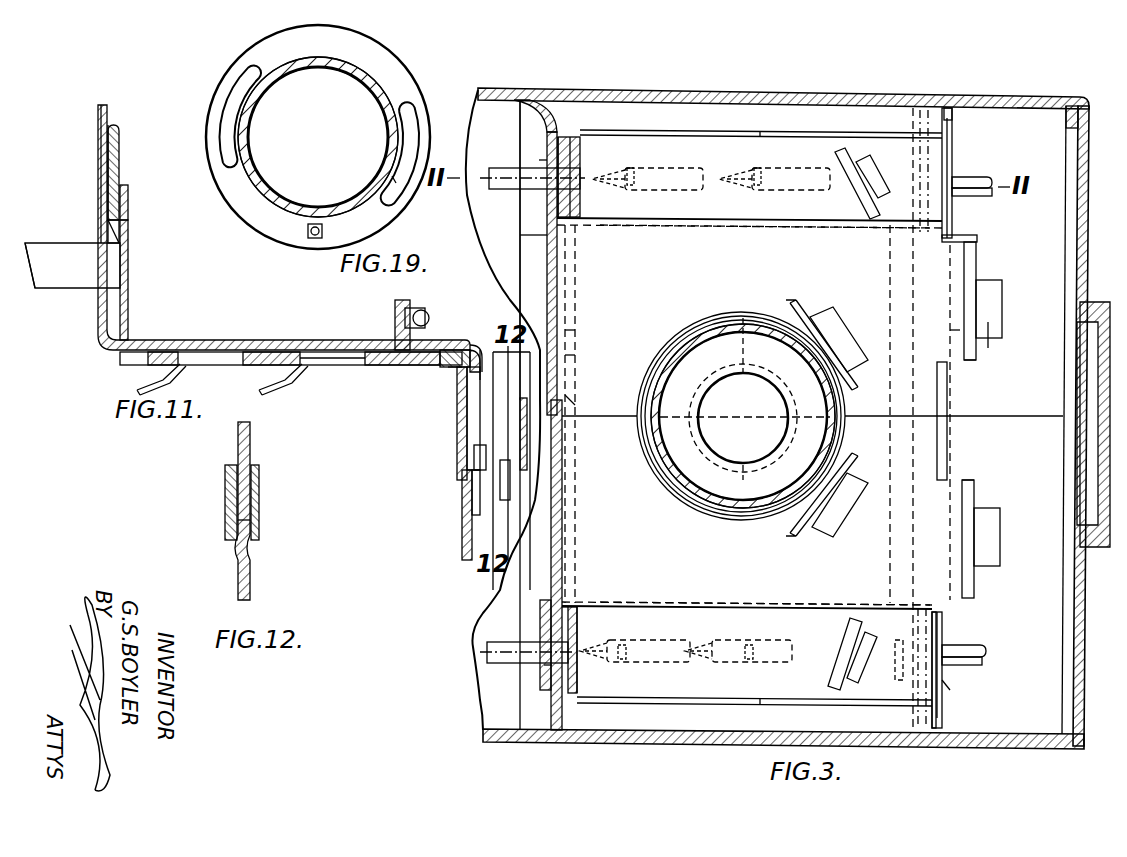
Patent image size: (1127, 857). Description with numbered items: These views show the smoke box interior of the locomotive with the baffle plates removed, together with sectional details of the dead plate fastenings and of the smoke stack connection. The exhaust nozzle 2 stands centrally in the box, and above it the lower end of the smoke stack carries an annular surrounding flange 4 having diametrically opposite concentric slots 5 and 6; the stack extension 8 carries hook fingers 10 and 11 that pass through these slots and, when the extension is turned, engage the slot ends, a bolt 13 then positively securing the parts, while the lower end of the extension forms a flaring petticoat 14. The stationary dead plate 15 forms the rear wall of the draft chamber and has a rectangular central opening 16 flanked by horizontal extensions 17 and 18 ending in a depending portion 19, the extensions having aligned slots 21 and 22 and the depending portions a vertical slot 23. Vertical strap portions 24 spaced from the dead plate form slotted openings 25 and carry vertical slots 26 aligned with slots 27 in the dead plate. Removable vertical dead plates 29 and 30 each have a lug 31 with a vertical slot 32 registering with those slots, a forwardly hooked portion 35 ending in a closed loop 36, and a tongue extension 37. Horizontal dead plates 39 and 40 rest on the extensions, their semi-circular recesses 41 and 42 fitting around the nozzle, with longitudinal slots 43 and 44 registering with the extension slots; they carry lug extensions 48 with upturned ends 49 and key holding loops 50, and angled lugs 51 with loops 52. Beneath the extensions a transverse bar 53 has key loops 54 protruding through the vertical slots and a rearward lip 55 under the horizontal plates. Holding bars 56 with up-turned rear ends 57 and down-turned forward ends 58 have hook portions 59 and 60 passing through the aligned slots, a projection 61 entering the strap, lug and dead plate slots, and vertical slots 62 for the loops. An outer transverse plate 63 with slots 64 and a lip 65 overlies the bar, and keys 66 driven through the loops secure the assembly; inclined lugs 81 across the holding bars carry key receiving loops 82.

In FIG. 3, the exhaust nozzle 2 is at (698, 434).
In FIG. 19, the annular surrounding flange 4 is at (395, 75).
In FIG. 3, the annular surrounding flange 4 is at (680, 735).
In FIG. 19, the concentric slot 5 is at (412, 126).
In FIG. 19, the concentric slot 6 is at (222, 151).
In FIG. 3, the stack extension 8 is at (688, 496).
In FIG. 19, the hook finger 10 is at (396, 183).
In FIG. 19, the hook finger 11 is at (238, 90).
In FIG. 19, the bolt 13 is at (314, 240).
In FIG. 3, the flaring portion or petticoat 14 is at (748, 510).
In FIG. 3, the stationary dead plate 15 is at (585, 108).
In FIG. 3, the rectangular central opening 16 is at (545, 232).
In FIG. 11, the horizontal extension 17 is at (115, 355).
In FIG. 3, the horizontal extension 17 is at (742, 100).
In FIG. 3, the horizontal extension 18 is at (595, 732).
In FIG. 11, the depending portion 19 is at (494, 540).
In FIG. 11, the slot 21 is at (225, 366).
In FIG. 11, the slot 22 is at (345, 366).
In FIG. 11, the vertical slot 23 is at (462, 495).
In FIG. 3, the vertical slot 23 is at (898, 676).
In FIG. 11, the vertical strap portion 24 is at (118, 165).
In FIG. 3, the vertical strap portion 24 is at (600, 130).
In FIG. 11, the slotted opening 25 is at (116, 140).
In FIG. 3, the slotted opening 25 is at (568, 140).
In FIG. 11, the vertical slot 26 is at (129, 230).
In FIG. 3, the vertical slot 26 is at (580, 171).
In FIG. 11, the vertical slot 27 is at (97, 233).
In FIG. 3, the vertical slot 27 is at (540, 165).
In FIG. 3, the removable vertical dead plate 29 is at (566, 311).
In FIG. 3, the removable vertical dead plate 30 is at (564, 530).
In FIG. 11, the lug 31 is at (100, 205).
In FIG. 3, the lug 31 is at (540, 132).
In FIG. 11, the vertical slot 32 is at (107, 240).
In FIG. 3, the vertical slot 32 is at (577, 188).
In FIG. 3, the forwardly hooked portion 35 is at (576, 330).
In FIG. 3, the closed loop 36 is at (576, 355).
In FIG. 3, the tongue extension 37 is at (568, 400).
In FIG. 11, the horizontal dead plate 39 is at (450, 362).
In FIG. 3, the horizontal dead plate 39 is at (870, 302).
In FIG. 3, the horizontal dead plate 40 is at (868, 570).
In FIG. 3, the semi-circular recess 41 is at (741, 386).
In FIG. 3, the semi-circular recess 42 is at (716, 475).
In FIG. 11, the longitudinal slot 43 is at (192, 352).
In FIG. 3, the longitudinal slot 43 is at (668, 195).
In FIG. 11, the longitudinal slot 44 is at (335, 352).
In FIG. 3, the longitudinal slot 44 is at (782, 195).
In FIG. 3, the lug extension 48 is at (962, 272).
In FIG. 3, the upturned end 49 is at (976, 306).
In FIG. 3, the key holding loop 50 is at (988, 518).
In FIG. 3, the lug 51 is at (798, 318).
In FIG. 3, the key holding loop 52 is at (838, 345).
In FIG. 11, the transverse bar 53 is at (457, 428).
In FIG. 3, the transverse bar 53 is at (952, 126).
In FIG. 11, the key loop 54 is at (470, 450).
In FIG. 3, the key loop 54 is at (985, 186).
In FIG. 11, the rearwardly extending lip 55 is at (482, 350).
In FIG. 3, the rearwardly extending lip 55 is at (893, 420).
In FIG. 11, the holding bar 56 is at (268, 352).
In FIG. 3, the holding bar 56 is at (770, 134).
In FIG. 11, the up-turned rear end 57 is at (129, 205).
In FIG. 3, the up-turned rear end 57 is at (588, 165).
In FIG. 11, the down-turned forward end 58 is at (472, 515).
In FIG. 11, the hook portion 59 is at (170, 372).
In FIG. 3, the hook portion 59 is at (640, 168).
In FIG. 11, the hook portion 60 is at (286, 376).
In FIG. 3, the hook portion 60 is at (746, 170).
In FIG. 11, the projection 61 is at (62, 290).
In FIG. 3, the projection 61 is at (496, 182).
In FIG. 11, the vertical slot 62 is at (458, 400).
In FIG. 3, the vertical slot 62 is at (944, 642).
In FIG. 11, the outer transverse plate 63 is at (452, 352).
In FIG. 3, the outer transverse plate 63 is at (954, 156).
In FIG. 11, the slot 64 is at (482, 460).
In FIG. 3, the slot 64 is at (944, 688).
In FIG. 3, the rearwardly extending lip 65 is at (939, 335).
In FIG. 11, the key 66 is at (500, 500).
In FIG. 12, the key 66 is at (248, 452).
In FIG. 3, the key 66 is at (994, 186).
In FIG. 11, the lug 81 is at (400, 306).
In FIG. 3, the lug 81 is at (853, 150).
In FIG. 11, the key receiving loop 82 is at (424, 312).
In FIG. 3, the key receiving loop 82 is at (870, 176).